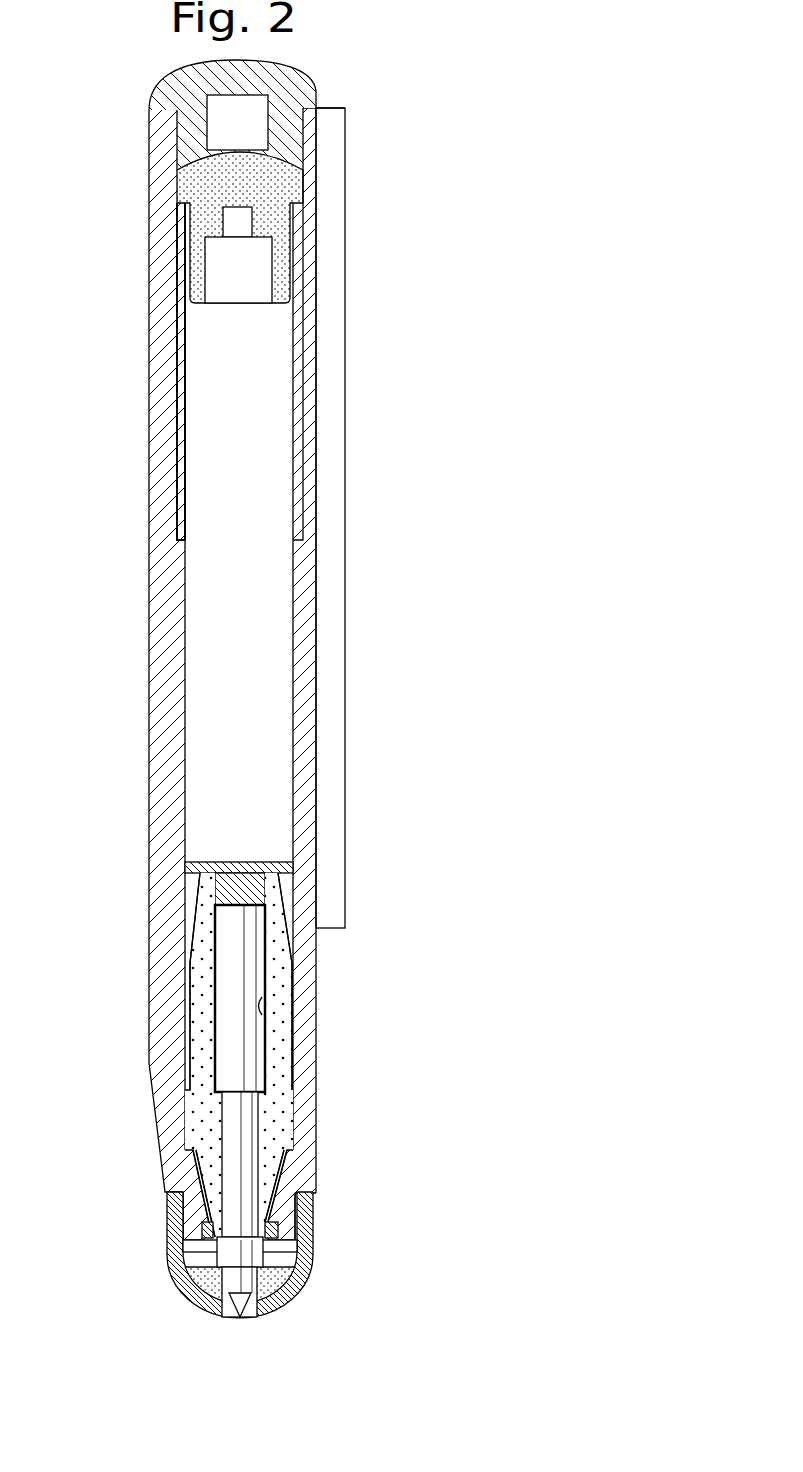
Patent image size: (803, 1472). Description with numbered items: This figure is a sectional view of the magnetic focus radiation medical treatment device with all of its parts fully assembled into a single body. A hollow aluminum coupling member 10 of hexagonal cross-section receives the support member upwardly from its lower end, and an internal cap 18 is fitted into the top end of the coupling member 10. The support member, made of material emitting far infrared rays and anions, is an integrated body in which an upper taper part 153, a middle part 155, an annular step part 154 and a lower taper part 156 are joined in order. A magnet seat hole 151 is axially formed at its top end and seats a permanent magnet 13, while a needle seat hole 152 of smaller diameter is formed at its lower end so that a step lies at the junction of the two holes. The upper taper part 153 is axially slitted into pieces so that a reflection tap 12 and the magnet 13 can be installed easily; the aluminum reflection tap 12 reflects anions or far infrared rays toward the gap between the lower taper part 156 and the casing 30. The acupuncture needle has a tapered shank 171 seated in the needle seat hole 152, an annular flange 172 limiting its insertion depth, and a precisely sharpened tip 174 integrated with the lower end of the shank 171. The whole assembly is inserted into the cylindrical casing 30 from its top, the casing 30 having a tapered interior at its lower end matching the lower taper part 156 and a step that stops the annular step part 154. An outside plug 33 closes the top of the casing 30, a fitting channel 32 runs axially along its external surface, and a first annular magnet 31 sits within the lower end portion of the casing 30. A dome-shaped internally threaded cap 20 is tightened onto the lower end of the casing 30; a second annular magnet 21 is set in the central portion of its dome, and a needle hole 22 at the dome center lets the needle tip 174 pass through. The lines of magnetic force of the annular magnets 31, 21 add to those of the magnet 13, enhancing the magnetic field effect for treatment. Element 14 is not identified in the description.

The coupling member 10 is at (288, 423).
The reflection tap 12 is at (230, 863).
The magnet 13 is at (243, 955).
The feed rod 14 is at (218, 1112).
The internal cap 18 is at (287, 192).
The cap 20 is at (310, 1260).
The second annular magnet 21 is at (280, 1273).
The needle hole 22 is at (240, 1318).
The casing 30 is at (162, 257).
The first annular magnet 31 is at (303, 1215).
The fitting channel 32 is at (328, 162).
The outside plug 33 is at (265, 78).
The magnet seat hole 151 is at (270, 1017).
The needle seat hole 152 is at (313, 1150).
The upper taper part 153 is at (283, 917).
The annular step part 154 is at (290, 1112).
The middle part 155 is at (282, 993).
The lower taper part 156 is at (293, 1178).
The shank 171 is at (230, 1180).
The annular flange 172 is at (230, 1245).
The sharpened tip 174 is at (270, 1310).